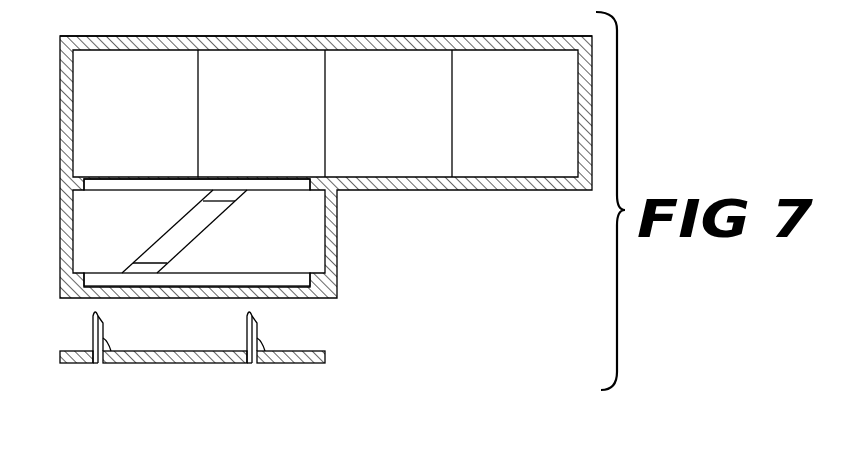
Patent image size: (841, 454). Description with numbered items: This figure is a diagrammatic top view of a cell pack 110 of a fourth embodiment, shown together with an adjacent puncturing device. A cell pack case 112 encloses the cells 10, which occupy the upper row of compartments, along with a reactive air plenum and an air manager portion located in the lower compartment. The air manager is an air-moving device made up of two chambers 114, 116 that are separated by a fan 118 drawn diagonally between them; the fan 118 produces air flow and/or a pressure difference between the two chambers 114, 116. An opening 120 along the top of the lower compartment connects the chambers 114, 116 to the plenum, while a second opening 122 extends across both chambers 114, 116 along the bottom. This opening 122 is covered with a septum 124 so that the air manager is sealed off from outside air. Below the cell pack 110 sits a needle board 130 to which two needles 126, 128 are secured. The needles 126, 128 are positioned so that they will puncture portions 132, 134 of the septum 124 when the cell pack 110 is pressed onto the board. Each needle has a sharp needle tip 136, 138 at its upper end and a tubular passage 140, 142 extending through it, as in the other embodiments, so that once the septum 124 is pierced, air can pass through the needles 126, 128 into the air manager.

The cells 10 is at (532, 125).
The cell pack 110 is at (448, 28).
The cell pack case 112 is at (405, 36).
The first chamber 114 is at (157, 229).
The second chamber 116 is at (295, 229).
The fan 118 is at (192, 226).
The opening 120 is at (150, 188).
The opening 122 is at (117, 278).
The septum 124 is at (338, 293).
The first needle 126 is at (110, 363).
The second needle 128 is at (264, 363).
The needle board 130 is at (325, 358).
The septum portion 132 is at (97, 298).
The septum portion 134 is at (250, 298).
The needle tip 136 is at (93, 312).
The needle tip 138 is at (246, 312).
The tubular passage 140 is at (96, 366).
The tubular passage 142 is at (247, 366).